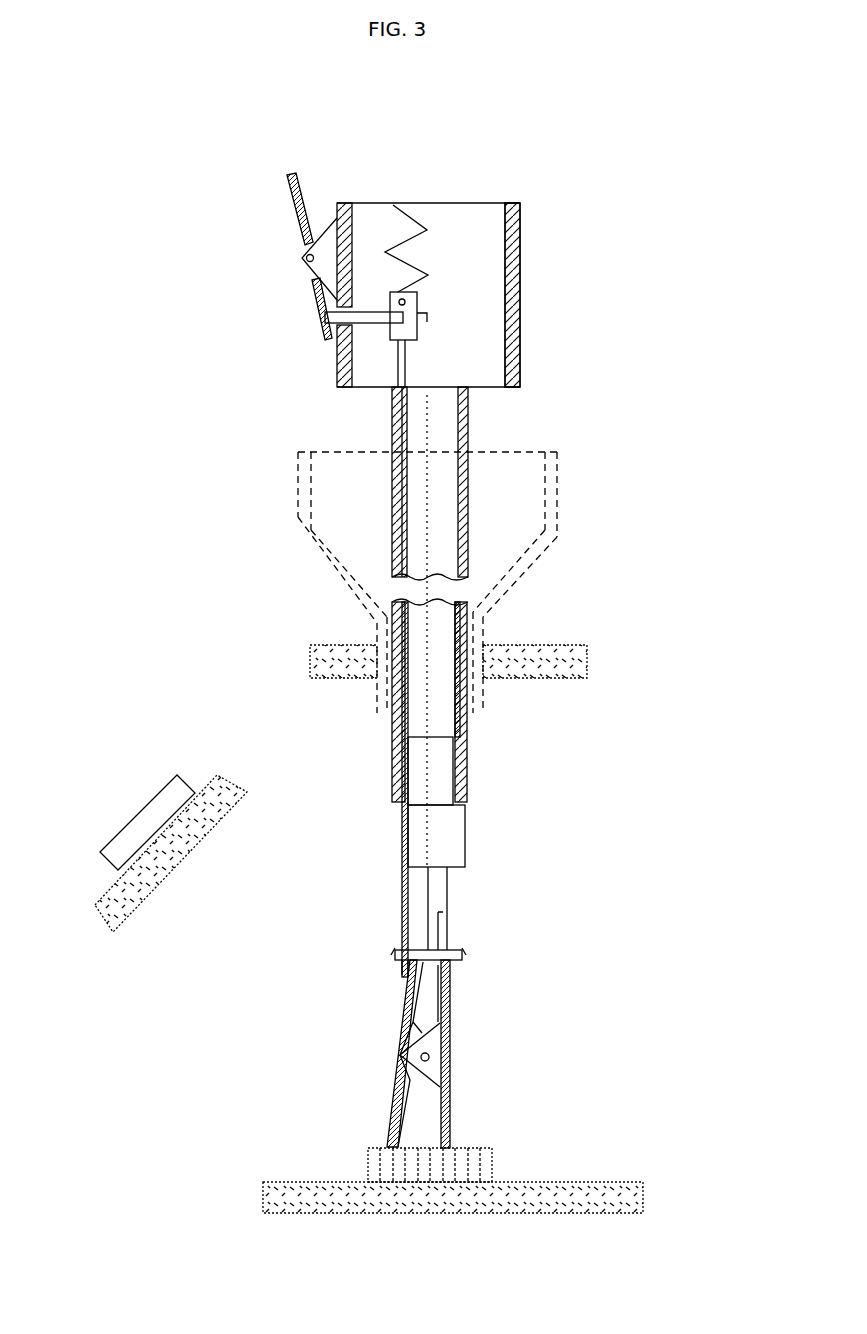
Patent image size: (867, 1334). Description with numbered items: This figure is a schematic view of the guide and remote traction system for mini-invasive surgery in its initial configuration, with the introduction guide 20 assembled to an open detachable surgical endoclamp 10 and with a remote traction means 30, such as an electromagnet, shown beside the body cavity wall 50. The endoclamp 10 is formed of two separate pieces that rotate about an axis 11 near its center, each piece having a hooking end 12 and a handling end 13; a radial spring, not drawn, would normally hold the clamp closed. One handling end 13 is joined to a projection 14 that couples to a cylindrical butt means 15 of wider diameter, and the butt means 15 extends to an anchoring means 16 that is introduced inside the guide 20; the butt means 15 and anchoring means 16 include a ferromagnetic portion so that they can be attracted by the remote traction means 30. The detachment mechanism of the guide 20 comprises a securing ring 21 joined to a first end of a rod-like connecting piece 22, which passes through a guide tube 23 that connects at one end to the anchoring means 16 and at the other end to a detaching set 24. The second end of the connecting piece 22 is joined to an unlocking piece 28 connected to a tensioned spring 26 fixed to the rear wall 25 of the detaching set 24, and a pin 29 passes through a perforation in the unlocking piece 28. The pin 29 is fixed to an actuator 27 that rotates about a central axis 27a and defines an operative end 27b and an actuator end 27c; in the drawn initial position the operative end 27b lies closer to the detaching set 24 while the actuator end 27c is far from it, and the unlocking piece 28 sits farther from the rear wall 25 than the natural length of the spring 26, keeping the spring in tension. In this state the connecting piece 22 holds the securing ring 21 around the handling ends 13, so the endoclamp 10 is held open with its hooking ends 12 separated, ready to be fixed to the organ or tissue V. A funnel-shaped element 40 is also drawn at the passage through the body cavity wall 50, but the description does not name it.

The detachable surgical endoclamp 10 is at (439, 1054).
The axis 11 is at (429, 1058).
The hooking end 12 is at (445, 1105).
The handling end 13 is at (447, 995).
The projection 14 is at (443, 887).
The cylindrical butt means 15 is at (447, 845).
The anchoring means 16 is at (447, 765).
The introduction guide 20 is at (473, 403).
The securing ring 21 is at (397, 955).
The connecting piece 22 is at (407, 845).
The guide tube 23 is at (392, 747).
The detaching set 24 is at (515, 355).
The rear wall 25 is at (478, 205).
The tensioned spring 26 is at (407, 218).
The actuator 27 is at (261, 257).
The central axis 27a is at (306, 261).
The operative end 27b is at (324, 295).
The actuator end 27c is at (292, 195).
The unlocking piece 28 is at (413, 303).
The pin 29 is at (373, 320).
The remote traction means 30 is at (140, 822).
The funnel guide 40 is at (302, 518).
The body cavity wall 50 is at (307, 648).
The organ or tissue V is at (357, 1155).